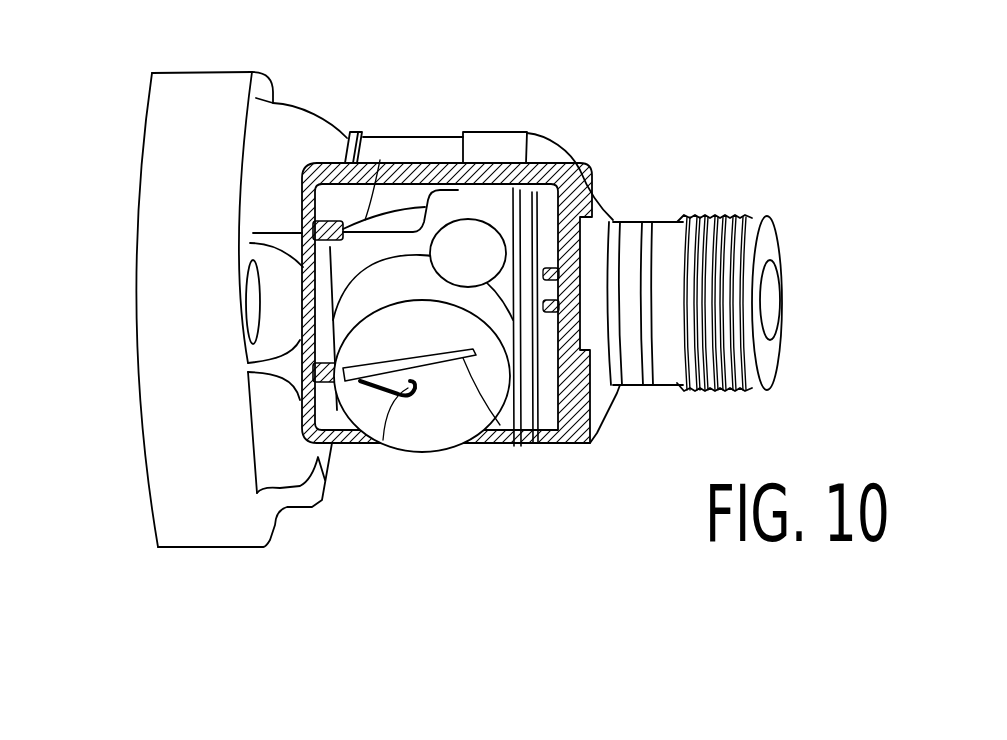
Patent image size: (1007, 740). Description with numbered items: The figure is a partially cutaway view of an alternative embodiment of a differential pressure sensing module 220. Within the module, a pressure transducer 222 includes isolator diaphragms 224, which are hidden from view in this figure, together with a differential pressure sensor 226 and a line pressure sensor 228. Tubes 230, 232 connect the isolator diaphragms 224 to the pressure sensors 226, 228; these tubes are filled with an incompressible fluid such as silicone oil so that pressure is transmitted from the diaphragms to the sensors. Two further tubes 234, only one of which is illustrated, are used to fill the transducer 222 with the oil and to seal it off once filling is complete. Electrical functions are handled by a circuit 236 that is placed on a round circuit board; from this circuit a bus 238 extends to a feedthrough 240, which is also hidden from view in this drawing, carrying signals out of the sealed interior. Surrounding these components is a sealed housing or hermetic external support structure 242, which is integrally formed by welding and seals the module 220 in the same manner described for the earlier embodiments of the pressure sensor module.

The differential pressure sensing module 220 is at (651, 88).
The pressure transducer 222 is at (357, 497).
The isolator diaphragms 224 is at (112, 365).
The differential pressure sensor 226 is at (458, 440).
The line pressure sensor 228 is at (478, 237).
The tube 230 is at (376, 445).
The tube 232 is at (380, 160).
The fill tube 234 is at (515, 446).
The circuit 236 is at (597, 208).
The bus 238 is at (543, 278).
The feedthrough 240 is at (772, 295).
The hermetic external support structure 242 is at (535, 138).